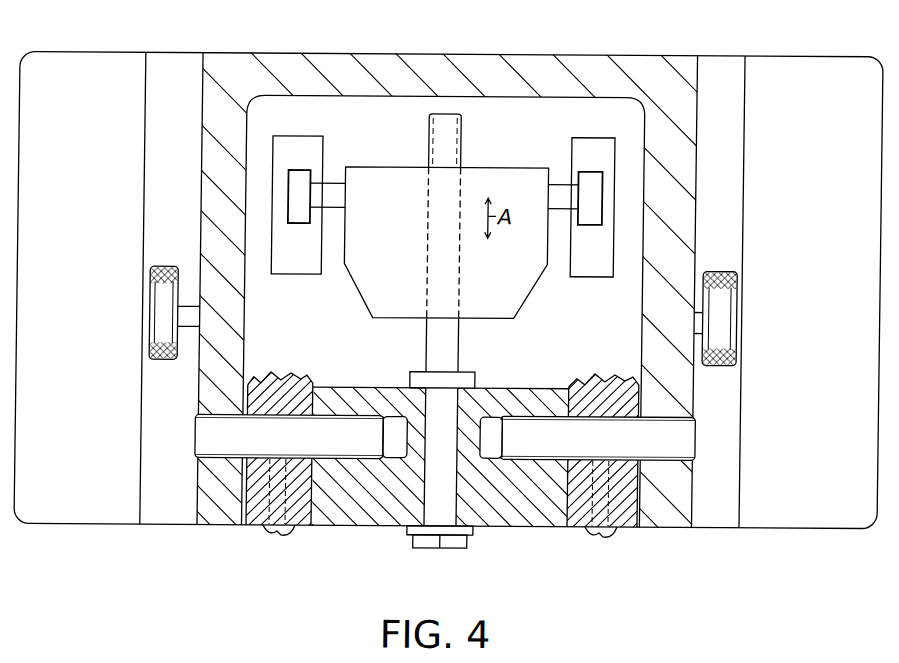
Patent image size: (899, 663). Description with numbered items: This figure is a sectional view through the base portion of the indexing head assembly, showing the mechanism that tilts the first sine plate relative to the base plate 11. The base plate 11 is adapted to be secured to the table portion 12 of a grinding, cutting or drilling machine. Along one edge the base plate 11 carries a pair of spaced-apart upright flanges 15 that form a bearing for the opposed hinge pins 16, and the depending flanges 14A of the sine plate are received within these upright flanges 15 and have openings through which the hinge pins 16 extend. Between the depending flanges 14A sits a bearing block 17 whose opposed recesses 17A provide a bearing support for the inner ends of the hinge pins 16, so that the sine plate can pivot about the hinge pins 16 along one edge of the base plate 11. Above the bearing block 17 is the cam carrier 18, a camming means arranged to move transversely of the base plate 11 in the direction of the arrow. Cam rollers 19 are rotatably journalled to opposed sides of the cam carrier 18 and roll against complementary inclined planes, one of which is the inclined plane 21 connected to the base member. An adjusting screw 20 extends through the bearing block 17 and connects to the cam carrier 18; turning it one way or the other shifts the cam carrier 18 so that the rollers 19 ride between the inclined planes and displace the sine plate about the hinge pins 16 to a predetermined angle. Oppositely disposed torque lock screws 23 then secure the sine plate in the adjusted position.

The base plate 11 is at (88, 527).
The table portion 12 is at (462, 137).
The depending flanges 14A is at (250, 527).
The upright flanges 15 is at (200, 477).
The hinge pins 16 is at (206, 432).
The bearing block 17 is at (375, 527).
The recesses 17A is at (407, 444).
The cam carrier 18 is at (378, 167).
The cam rollers 19 is at (294, 224).
The adjusting screw 20 is at (430, 353).
The inclined plane 21 is at (299, 137).
The torque lock screws 23 is at (154, 325).